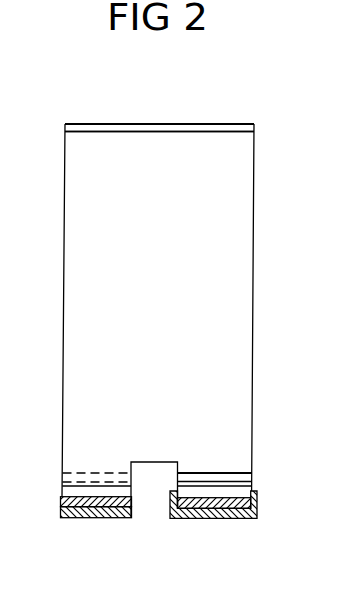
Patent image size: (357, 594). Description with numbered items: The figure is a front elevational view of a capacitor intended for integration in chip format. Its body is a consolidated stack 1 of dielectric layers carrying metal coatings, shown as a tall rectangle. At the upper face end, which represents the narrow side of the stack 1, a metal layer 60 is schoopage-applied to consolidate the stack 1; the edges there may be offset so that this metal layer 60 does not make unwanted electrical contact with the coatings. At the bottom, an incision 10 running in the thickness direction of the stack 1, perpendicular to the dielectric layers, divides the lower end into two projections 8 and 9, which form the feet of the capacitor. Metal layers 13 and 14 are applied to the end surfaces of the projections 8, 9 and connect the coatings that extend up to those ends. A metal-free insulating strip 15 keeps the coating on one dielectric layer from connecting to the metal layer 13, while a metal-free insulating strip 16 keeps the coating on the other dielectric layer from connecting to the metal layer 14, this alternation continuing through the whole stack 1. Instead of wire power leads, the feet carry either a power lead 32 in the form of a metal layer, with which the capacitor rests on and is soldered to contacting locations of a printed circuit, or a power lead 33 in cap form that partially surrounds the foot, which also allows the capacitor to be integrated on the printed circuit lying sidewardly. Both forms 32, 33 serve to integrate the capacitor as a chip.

The consolidated stack 1 is at (248, 168).
The metal layer 60 is at (194, 130).
The projection 8 is at (240, 492).
The projection 9 is at (68, 487).
The incision 10 is at (153, 505).
The metal layer 13 is at (244, 504).
The metal layer 14 is at (61, 500).
The metal-free insulating strip 15 is at (200, 473).
The metal-free insulating strip 16 is at (110, 473).
The power lead 32 is at (90, 518).
The power lead 33 is at (210, 518).